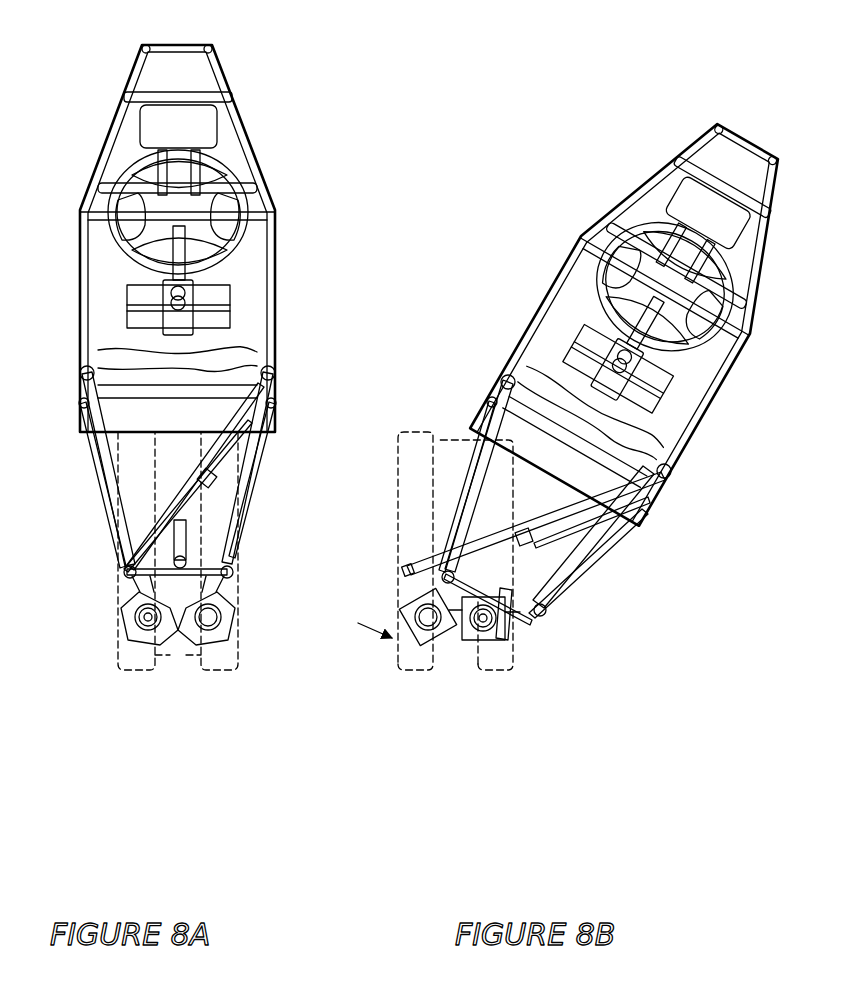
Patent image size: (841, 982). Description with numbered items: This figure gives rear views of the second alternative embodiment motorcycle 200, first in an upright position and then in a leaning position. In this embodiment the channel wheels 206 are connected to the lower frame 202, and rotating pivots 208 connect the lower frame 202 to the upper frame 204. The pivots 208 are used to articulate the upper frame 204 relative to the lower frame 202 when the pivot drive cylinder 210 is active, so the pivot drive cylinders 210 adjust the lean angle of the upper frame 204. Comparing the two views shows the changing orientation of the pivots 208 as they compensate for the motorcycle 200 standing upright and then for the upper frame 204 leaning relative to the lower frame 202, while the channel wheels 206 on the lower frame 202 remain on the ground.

In FIG. 8A, the motorcycle 200 is at (278, 64).
In FIG. 8B, the motorcycle 200 is at (639, 94).
In FIG. 8A, the lower frame 202 is at (153, 633).
In FIG. 8B, the lower frame 202 is at (507, 632).
In FIG. 8A, the upper frame 204 is at (102, 498).
In FIG. 8B, the upper frame 204 is at (573, 605).
In FIG. 8A, the channel wheels 206 is at (252, 635).
In FIG. 8B, the channel wheels 206 is at (439, 616).
In FIG. 8A, the rotating pivots 208 is at (167, 650).
In FIG. 8B, the rotating pivots 208 is at (468, 655).
In FIG. 8A, the pivot drive cylinder 210 is at (162, 548).
In FIG. 8B, the pivot drive cylinder 210 is at (510, 648).